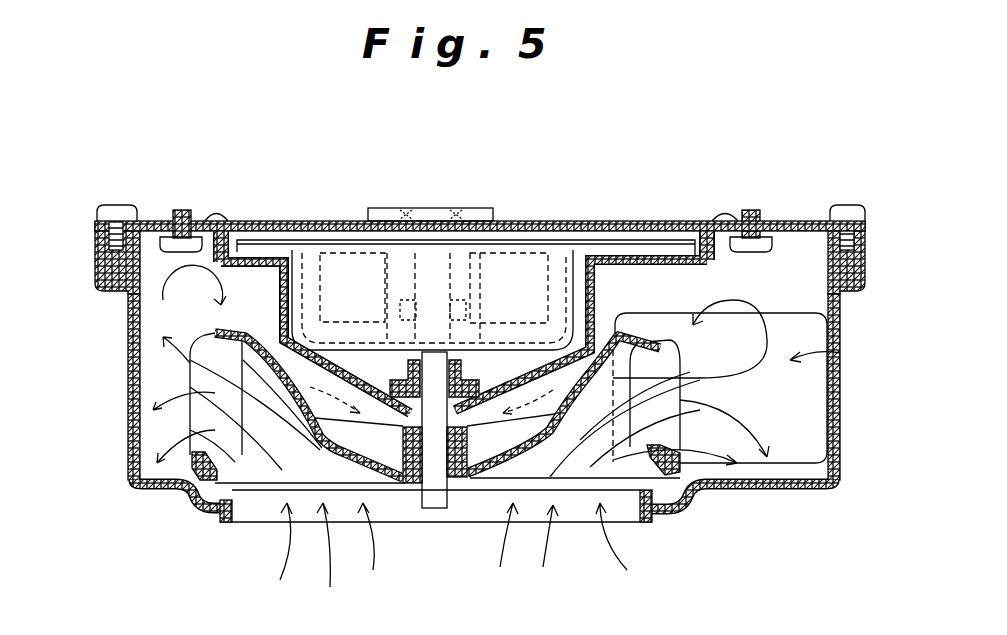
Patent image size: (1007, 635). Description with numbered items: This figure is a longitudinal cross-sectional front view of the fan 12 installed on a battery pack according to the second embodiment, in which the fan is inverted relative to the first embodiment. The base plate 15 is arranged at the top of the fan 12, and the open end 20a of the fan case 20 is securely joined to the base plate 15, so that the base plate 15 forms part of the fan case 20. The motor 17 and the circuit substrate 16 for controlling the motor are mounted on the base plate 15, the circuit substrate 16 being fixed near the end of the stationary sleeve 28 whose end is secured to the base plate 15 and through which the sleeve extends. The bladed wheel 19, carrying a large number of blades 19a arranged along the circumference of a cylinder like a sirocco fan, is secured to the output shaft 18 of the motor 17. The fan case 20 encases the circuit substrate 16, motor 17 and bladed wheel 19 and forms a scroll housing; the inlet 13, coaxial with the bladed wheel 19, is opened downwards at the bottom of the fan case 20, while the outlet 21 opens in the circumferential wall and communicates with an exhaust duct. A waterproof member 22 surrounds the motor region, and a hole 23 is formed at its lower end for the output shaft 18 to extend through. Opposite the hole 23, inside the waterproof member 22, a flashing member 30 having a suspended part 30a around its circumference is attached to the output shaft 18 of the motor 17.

The fan 12 is at (110, 362).
The inlet 13 is at (403, 517).
The base plate 15 is at (292, 221).
The circuit substrate 16 is at (593, 250).
The motor 17 is at (522, 283).
The output shaft 18 is at (437, 492).
The bladed wheel 19 is at (337, 449).
The blades 19a is at (213, 412).
The fan case 20 is at (128, 330).
The open end 20a is at (150, 221).
The outlet 21 is at (840, 355).
The waterproof member 22 is at (597, 298).
The hole 23 is at (430, 395).
The stationary sleeve 28 is at (460, 232).
The flashing member 30 is at (470, 377).
The suspended part 30a is at (398, 387).